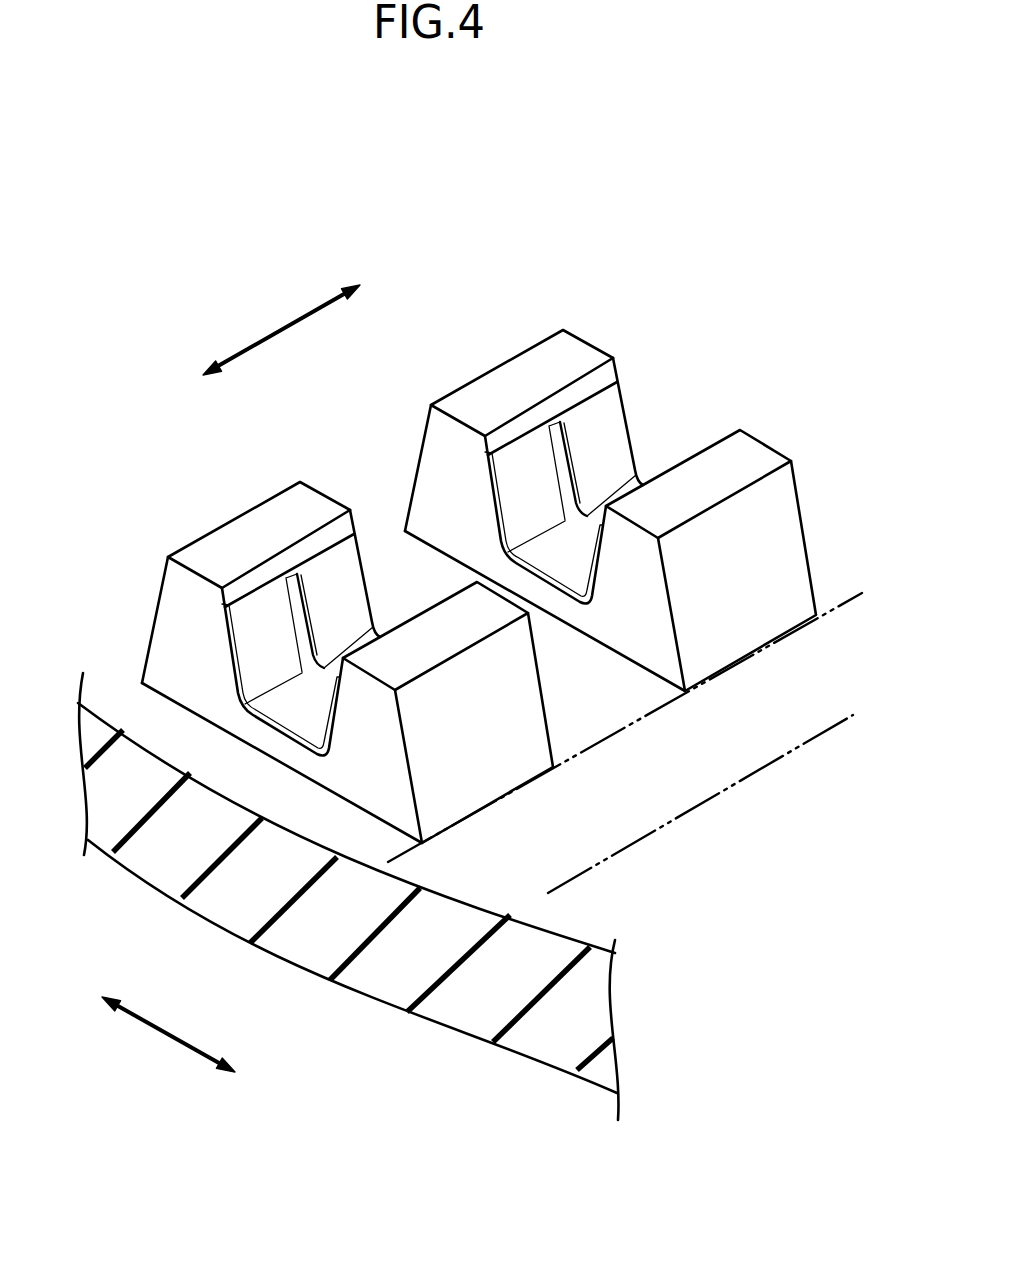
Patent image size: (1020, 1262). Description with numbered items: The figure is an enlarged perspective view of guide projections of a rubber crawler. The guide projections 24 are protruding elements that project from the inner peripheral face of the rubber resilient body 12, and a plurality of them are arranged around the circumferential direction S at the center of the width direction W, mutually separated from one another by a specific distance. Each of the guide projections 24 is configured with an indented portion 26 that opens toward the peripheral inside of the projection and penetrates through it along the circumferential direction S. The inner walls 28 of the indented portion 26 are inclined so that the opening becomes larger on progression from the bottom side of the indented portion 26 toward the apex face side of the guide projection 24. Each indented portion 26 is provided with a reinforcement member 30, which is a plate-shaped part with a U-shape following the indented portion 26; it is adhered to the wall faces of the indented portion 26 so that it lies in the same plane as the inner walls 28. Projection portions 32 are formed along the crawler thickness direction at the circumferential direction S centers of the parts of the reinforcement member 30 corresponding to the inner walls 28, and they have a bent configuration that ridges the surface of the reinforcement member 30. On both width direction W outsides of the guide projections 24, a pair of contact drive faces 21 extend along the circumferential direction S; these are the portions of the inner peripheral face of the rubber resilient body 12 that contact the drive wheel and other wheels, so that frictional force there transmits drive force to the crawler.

The rubber resilient body 12 is at (143, 852).
The contact drive faces 21 is at (627, 805).
The guide projections 24 is at (530, 715).
The indented portion 26 is at (345, 583).
The inner walls 28 is at (323, 542).
The reinforcement member 30 is at (250, 622).
The projection portions 32 is at (293, 575).
The circumferential direction S is at (282, 328).
The width direction W is at (158, 1032).